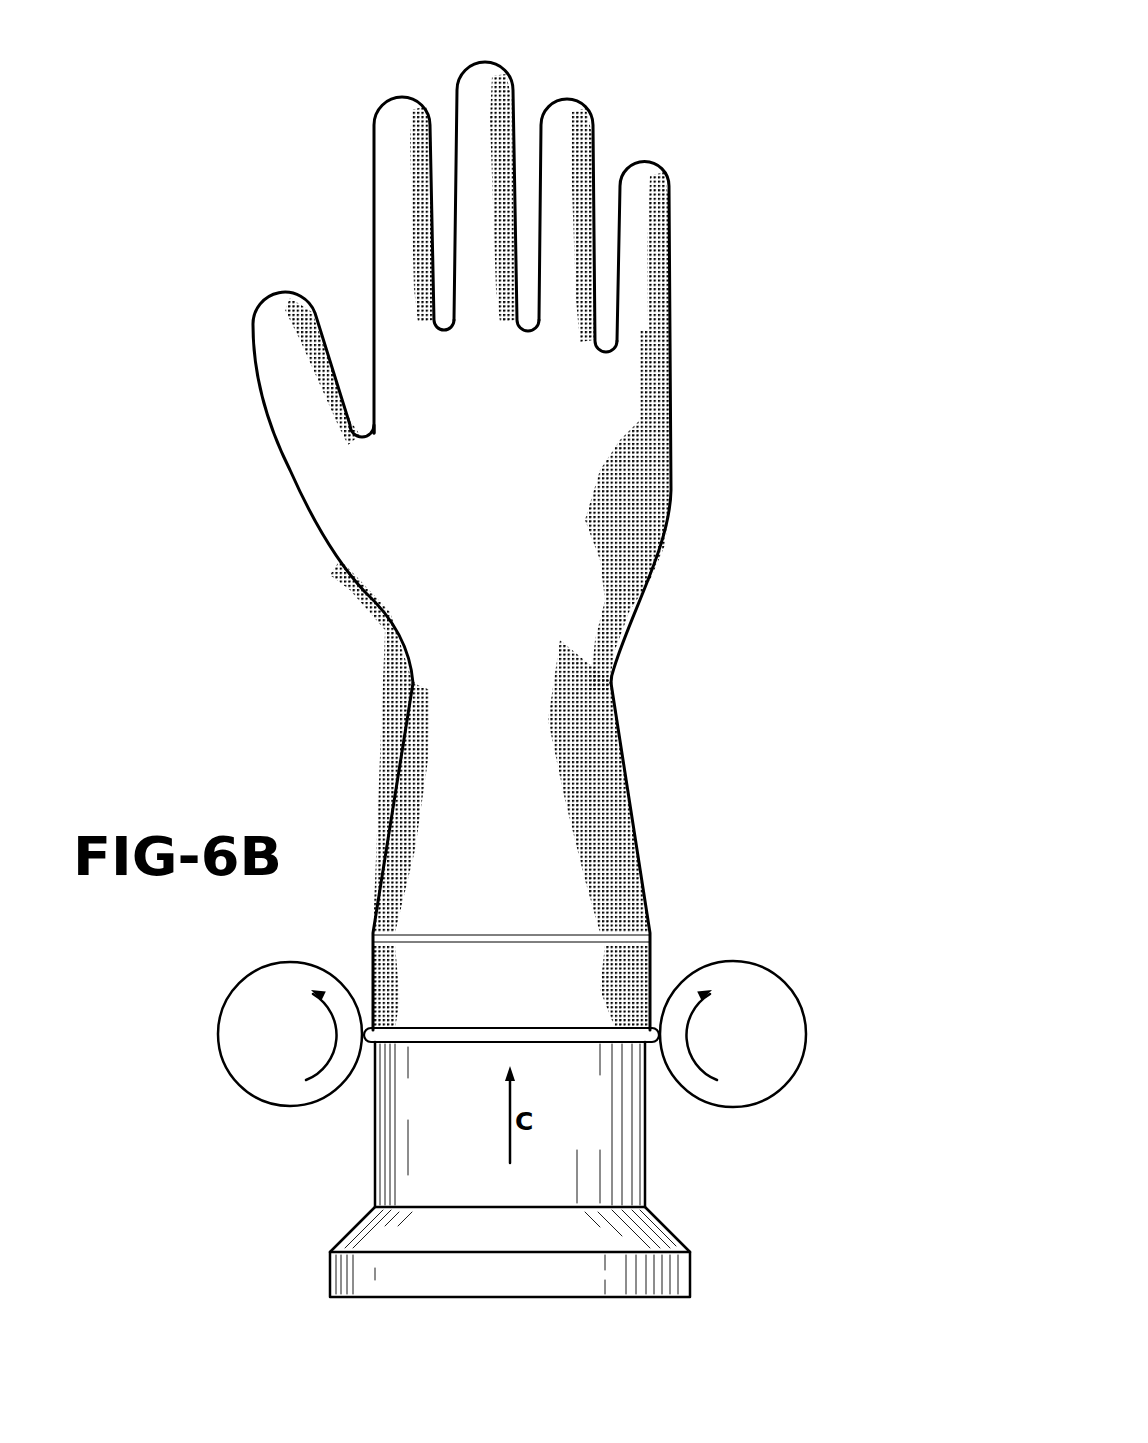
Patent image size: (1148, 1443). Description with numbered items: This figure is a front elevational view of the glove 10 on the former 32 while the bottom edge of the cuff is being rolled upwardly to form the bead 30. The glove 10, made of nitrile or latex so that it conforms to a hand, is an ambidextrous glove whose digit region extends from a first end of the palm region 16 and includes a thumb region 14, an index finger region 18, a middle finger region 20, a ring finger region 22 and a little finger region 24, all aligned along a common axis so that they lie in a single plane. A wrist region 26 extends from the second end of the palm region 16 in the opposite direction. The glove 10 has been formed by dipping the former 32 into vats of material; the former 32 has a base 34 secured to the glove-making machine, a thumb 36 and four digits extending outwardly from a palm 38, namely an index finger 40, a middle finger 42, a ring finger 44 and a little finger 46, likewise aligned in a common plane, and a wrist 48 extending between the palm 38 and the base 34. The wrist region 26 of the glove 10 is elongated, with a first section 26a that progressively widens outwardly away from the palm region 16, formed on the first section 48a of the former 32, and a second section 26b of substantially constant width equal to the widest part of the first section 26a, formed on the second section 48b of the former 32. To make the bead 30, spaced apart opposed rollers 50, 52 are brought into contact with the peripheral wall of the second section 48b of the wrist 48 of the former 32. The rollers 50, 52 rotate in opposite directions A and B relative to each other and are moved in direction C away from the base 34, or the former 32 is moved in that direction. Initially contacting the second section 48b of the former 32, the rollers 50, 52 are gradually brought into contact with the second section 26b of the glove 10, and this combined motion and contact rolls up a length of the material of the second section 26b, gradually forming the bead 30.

The glove 10 is at (486, 519).
The thumb region 14 is at (290, 468).
The palm region 16 is at (630, 510).
The index finger region 18 is at (368, 245).
The middle finger region 20 is at (489, 170).
The ring finger region 22 is at (600, 204).
The little finger region 24 is at (679, 408).
The wrist region 26 is at (522, 795).
The first section 26a is at (462, 732).
The second section 26b is at (570, 973).
The bead 30 is at (450, 1043).
The former 32 is at (676, 1220).
The base 34 is at (696, 1266).
The thumb 36 is at (270, 337).
The palm 38 is at (553, 458).
The index finger 40 is at (390, 148).
The middle finger 42 is at (465, 88).
The ring finger 44 is at (562, 107).
The little finger 46 is at (643, 206).
The wrist 48 is at (460, 790).
The first section 48a is at (533, 851).
The second section 48b is at (370, 1166).
The roller 50 is at (219, 1018).
The roller 52 is at (806, 1018).